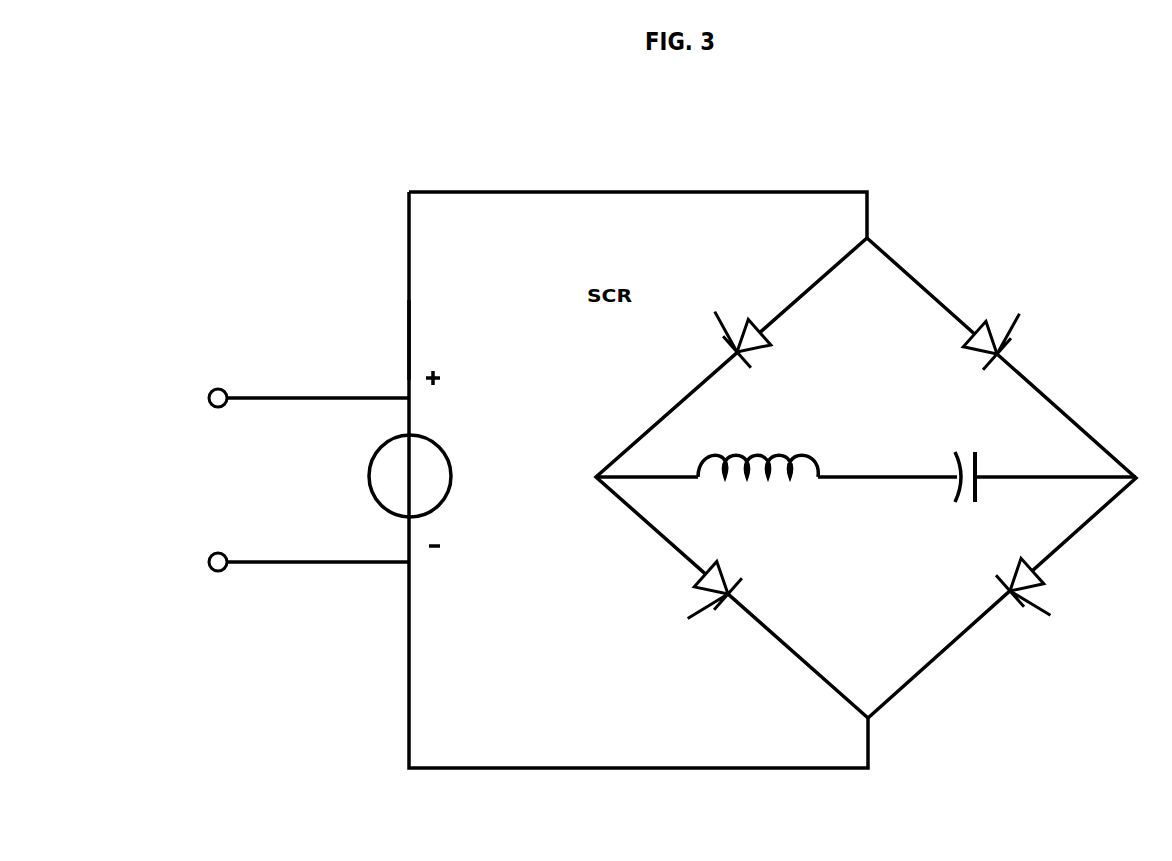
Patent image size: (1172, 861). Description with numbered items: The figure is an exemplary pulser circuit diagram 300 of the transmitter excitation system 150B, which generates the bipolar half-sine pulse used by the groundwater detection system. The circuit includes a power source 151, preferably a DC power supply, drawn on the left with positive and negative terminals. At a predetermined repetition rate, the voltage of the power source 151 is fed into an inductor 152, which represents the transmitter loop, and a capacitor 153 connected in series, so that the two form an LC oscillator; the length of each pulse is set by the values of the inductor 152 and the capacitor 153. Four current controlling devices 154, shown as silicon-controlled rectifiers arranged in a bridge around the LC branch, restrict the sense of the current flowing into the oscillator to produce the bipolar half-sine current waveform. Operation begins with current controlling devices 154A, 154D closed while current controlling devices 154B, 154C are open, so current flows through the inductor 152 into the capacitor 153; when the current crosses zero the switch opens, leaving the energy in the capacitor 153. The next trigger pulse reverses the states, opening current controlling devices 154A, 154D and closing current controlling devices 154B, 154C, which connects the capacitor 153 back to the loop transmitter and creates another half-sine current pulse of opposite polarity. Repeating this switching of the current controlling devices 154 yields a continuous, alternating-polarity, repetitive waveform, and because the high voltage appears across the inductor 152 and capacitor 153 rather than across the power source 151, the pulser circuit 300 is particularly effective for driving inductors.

The transmitter excitation system 150B is at (296, 170).
The pulser circuit diagram 300 is at (331, 291).
The power source 151 is at (328, 471).
The inductor 152 is at (776, 447).
The capacitor 153 is at (1038, 460).
The current controlling devices 154 is at (1036, 343).
The current controlling device 154A is at (740, 323).
The current controlling device 154B is at (995, 324).
The current controlling device 154C is at (710, 606).
The current controlling device 154D is at (1035, 605).